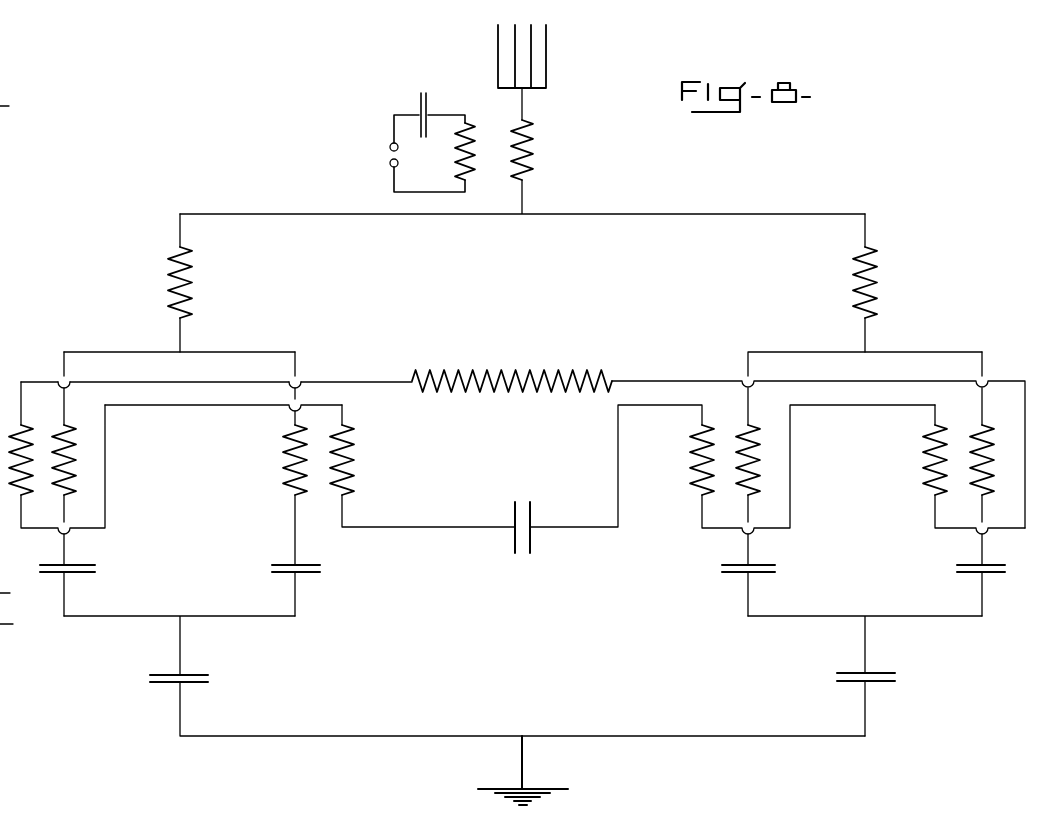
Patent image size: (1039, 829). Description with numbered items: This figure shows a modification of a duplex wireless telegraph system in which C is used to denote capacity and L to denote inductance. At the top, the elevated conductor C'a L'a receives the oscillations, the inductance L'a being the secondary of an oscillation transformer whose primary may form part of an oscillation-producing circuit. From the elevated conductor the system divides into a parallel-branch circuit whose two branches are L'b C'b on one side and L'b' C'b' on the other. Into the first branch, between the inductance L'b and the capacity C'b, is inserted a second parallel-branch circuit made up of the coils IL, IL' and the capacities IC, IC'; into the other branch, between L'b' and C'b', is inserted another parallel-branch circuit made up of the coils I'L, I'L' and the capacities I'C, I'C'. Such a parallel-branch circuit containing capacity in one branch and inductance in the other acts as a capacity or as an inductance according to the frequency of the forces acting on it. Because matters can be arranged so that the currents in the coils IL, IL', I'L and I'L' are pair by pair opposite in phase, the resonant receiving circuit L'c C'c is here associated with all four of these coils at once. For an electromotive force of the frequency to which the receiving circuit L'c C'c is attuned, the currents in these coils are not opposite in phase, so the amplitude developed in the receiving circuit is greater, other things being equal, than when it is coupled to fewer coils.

The elevated conductor capacity C'a is at (559, 56).
The secondary of oscillation transformer L'a is at (549, 150).
The parallel-branch inductance L'b is at (210, 282).
The parallel-branch inductance L'b' is at (897, 282).
The resonant receiving circuit inductance L'c is at (512, 359).
The resonant receiving circuit capacity C'c is at (496, 546).
The inductance coil IL is at (78, 460).
The inductance coil IL' is at (288, 460).
The capacity IC is at (86, 568).
The capacity IC' is at (270, 549).
The parallel-branch capacity C'b is at (207, 680).
The inductance coil I'L is at (764, 460).
The inductance coil I'L' is at (919, 476).
The capacity I'C is at (707, 578).
The capacity I'C' is at (931, 568).
The parallel-branch capacity C'b' is at (818, 672).